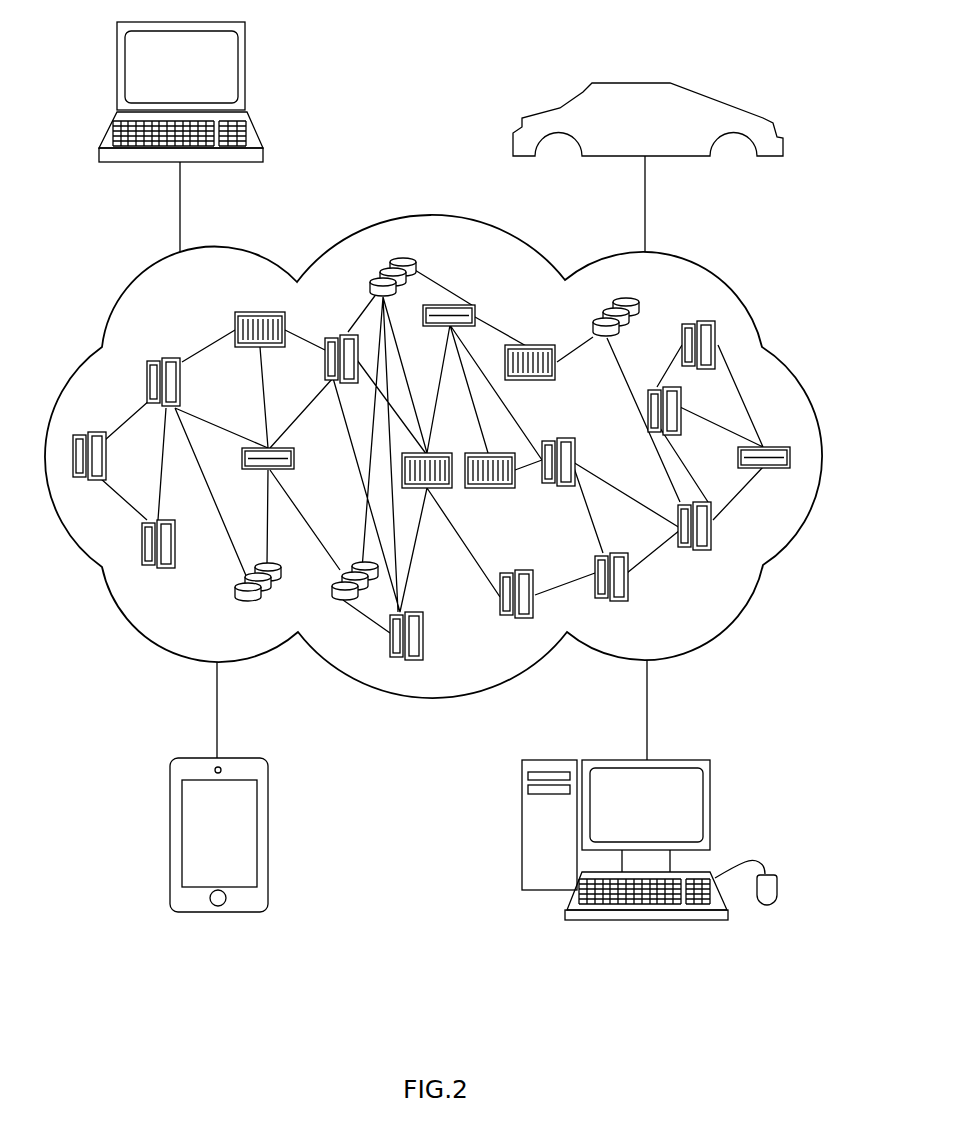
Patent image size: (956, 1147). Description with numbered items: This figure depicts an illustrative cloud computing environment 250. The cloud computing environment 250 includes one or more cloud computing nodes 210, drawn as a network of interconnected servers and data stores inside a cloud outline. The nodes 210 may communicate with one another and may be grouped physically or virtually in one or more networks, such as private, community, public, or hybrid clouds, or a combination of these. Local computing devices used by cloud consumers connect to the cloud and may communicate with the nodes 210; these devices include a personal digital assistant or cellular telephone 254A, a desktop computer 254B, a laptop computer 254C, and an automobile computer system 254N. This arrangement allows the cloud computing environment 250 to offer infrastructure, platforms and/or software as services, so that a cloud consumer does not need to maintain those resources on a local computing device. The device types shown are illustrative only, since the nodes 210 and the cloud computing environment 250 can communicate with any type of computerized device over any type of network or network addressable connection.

The laptop computer 254C is at (247, 70).
The automobile computer system 254N is at (610, 83).
The cloud computing environment 250 is at (798, 376).
The cloud computing nodes 210 is at (780, 495).
The personal digital assistant or cellular telephone 254A is at (268, 818).
The desktop computer 254B is at (710, 782).